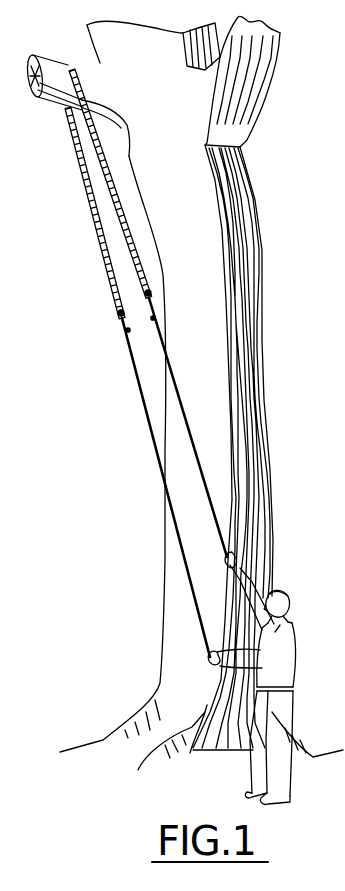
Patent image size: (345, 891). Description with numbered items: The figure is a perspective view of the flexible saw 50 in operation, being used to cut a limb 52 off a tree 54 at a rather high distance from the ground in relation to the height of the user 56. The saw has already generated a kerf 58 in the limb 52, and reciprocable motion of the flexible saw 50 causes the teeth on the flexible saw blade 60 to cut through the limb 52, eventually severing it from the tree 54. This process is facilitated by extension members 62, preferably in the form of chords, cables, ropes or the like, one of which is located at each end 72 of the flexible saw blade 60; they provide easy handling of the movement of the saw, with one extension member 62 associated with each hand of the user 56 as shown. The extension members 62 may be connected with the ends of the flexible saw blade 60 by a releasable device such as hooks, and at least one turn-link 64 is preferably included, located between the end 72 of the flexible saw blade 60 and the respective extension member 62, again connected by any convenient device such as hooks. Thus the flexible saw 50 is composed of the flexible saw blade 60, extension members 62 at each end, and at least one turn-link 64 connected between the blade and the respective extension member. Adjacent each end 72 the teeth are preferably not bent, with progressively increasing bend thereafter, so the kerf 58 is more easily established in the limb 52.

The flexible saw 50 is at (122, 350).
The limb 52 is at (50, 101).
The tree 54 is at (262, 336).
The user 56 is at (293, 638).
The kerf 58 is at (70, 57).
The flexible saw blade 60 is at (100, 232).
The extension members 62 is at (128, 364).
The turn-link 64 is at (153, 318).
The end 72 is at (118, 312).